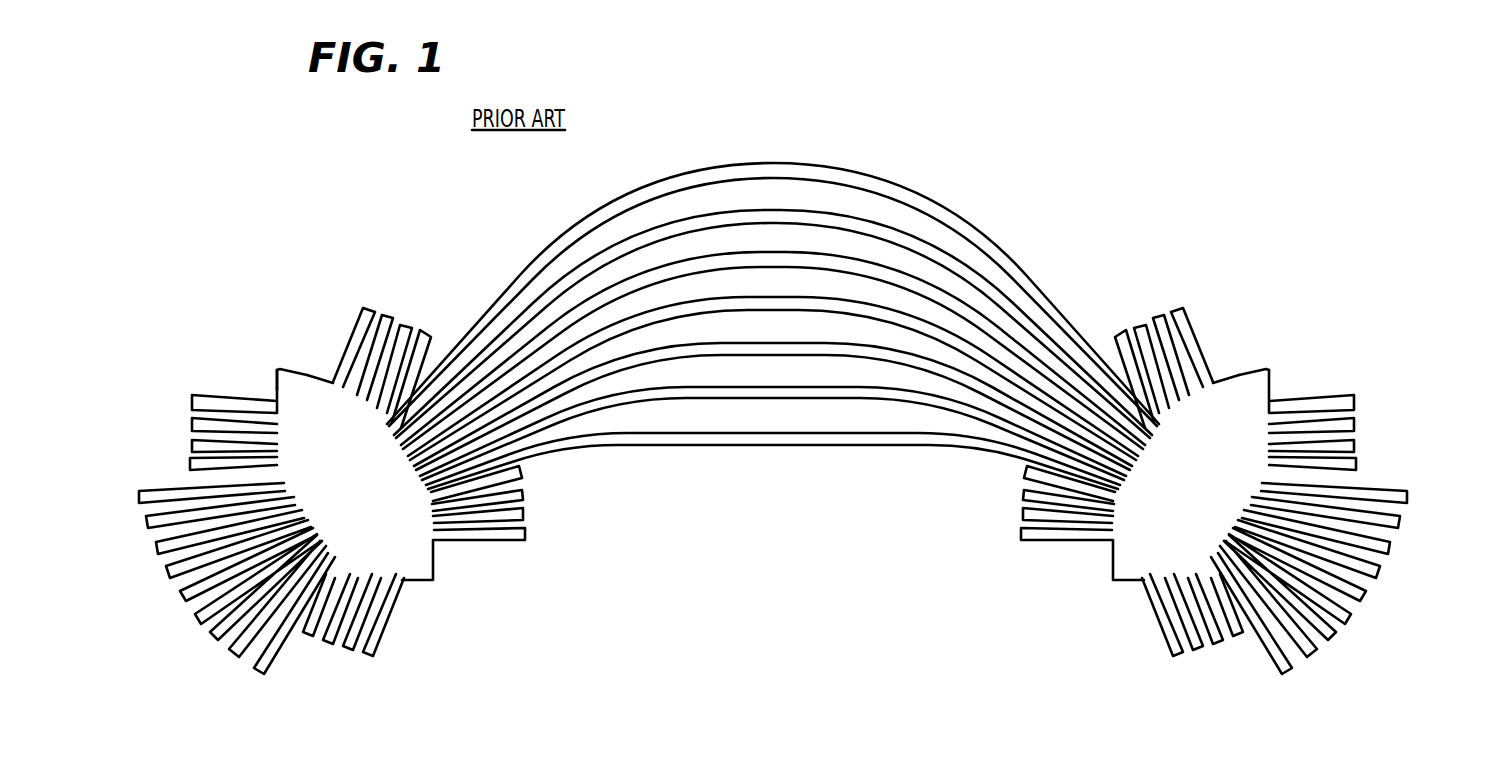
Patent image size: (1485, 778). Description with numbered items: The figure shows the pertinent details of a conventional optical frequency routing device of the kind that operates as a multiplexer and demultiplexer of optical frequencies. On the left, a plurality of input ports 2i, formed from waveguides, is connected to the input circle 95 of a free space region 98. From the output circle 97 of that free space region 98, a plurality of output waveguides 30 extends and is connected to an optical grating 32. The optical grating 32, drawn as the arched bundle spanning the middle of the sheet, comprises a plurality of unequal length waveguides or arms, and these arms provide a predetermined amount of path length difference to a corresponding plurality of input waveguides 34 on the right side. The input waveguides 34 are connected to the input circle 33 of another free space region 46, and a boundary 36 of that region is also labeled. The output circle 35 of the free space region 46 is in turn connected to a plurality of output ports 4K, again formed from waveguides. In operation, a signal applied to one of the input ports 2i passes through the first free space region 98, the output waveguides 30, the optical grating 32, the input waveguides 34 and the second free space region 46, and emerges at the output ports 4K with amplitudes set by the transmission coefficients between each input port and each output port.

The output waveguides 30 is at (389, 314).
The free space region 98 is at (280, 370).
The output circle 97 is at (307, 368).
The input circle 95 is at (277, 388).
The input ports 2i is at (212, 634).
The optical grating 32 is at (977, 468).
The input waveguides 34 is at (1157, 318).
The input circle 33 is at (1263, 373).
The free space region boundary 36 is at (1265, 373).
The output circle 35 is at (1272, 393).
The output ports 4K is at (1387, 546).
The free space region 46 is at (1143, 579).